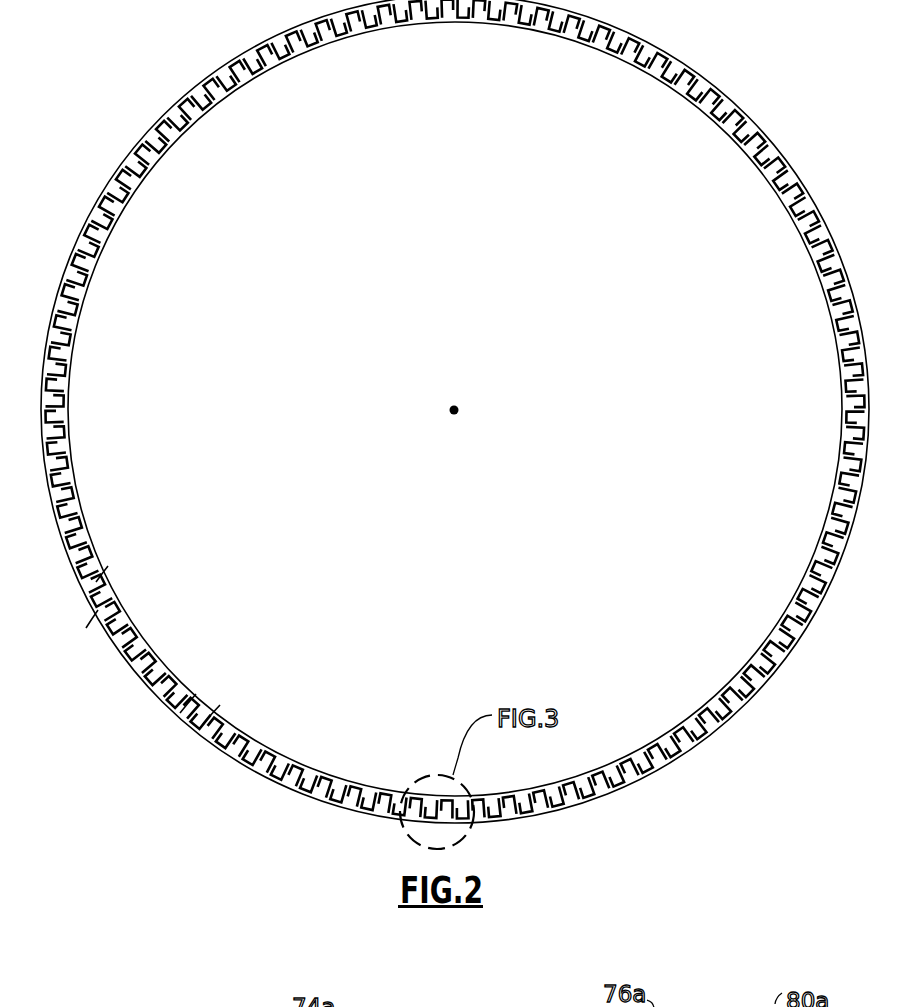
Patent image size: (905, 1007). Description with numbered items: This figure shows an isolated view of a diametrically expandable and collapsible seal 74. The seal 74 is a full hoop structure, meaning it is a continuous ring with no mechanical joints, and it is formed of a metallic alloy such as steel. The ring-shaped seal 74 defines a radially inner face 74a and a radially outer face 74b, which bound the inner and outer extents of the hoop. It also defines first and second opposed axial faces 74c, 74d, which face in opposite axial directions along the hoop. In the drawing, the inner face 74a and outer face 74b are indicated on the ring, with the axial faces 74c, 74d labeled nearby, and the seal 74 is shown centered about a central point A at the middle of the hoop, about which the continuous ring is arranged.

The seal 74 is at (288, 802).
The radially inner face 74a is at (102, 578).
The radially outer face 74b is at (92, 618).
The first axial face 74c is at (188, 704).
The second axial face 74d is at (213, 713).
The central axis point A is at (458, 410).